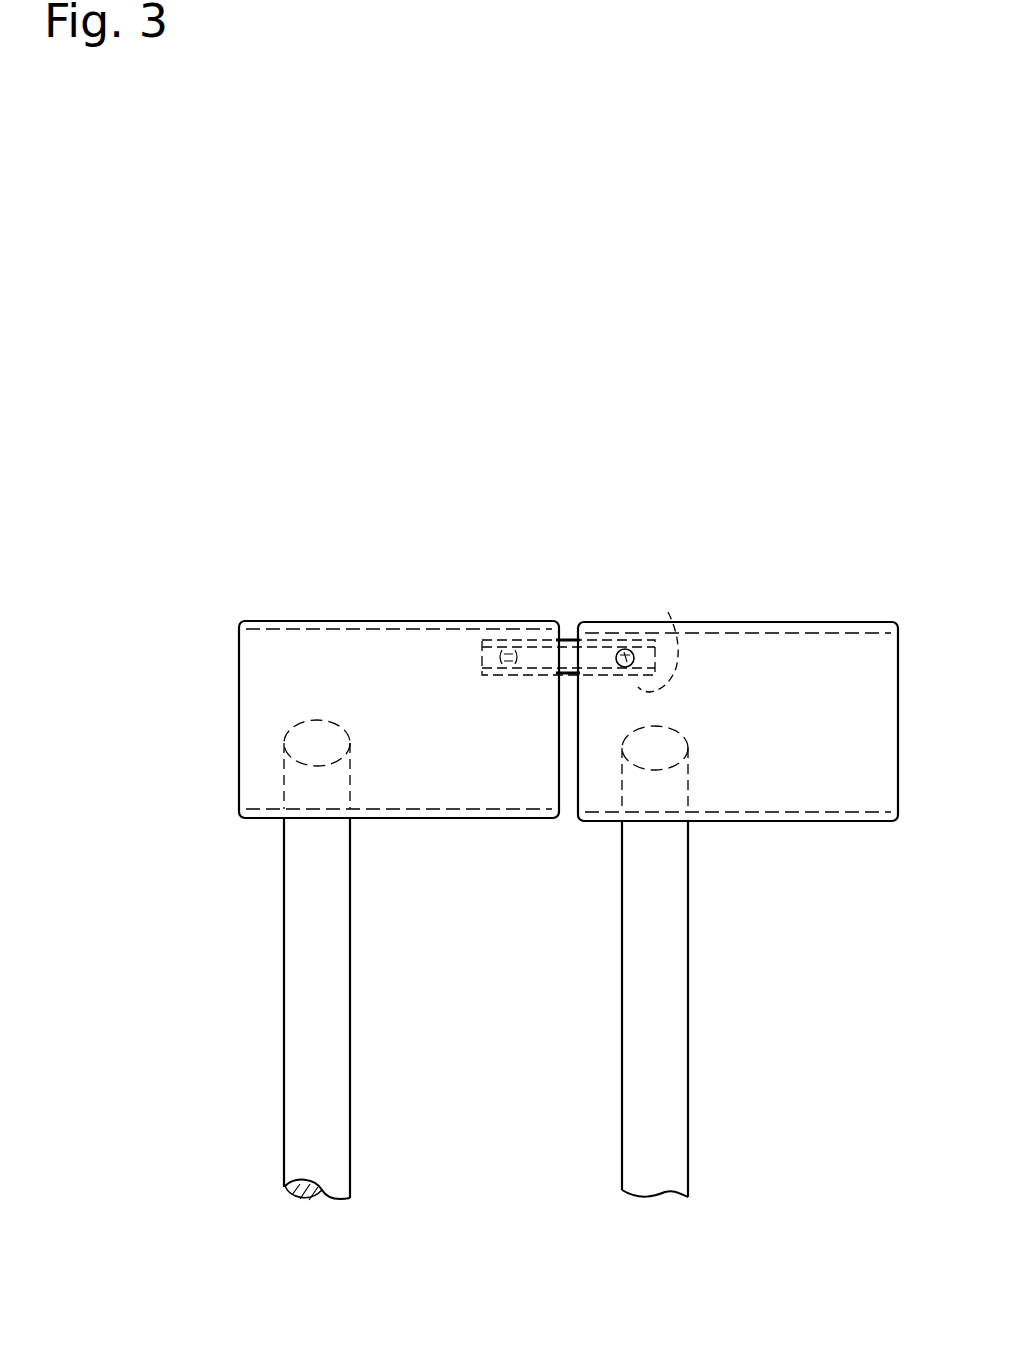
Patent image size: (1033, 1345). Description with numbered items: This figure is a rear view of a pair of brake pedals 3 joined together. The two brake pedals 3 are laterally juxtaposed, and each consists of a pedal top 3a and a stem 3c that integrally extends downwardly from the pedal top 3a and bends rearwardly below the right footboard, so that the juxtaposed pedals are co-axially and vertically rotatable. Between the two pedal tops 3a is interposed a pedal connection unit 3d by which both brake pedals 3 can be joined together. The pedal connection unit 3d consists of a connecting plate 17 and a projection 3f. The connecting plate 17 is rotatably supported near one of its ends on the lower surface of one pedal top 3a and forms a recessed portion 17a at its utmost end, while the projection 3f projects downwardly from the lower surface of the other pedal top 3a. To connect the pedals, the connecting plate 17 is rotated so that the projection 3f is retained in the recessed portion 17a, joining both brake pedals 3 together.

The brake pedal 3 is at (568, 732).
The pedal top 3a is at (359, 645).
The stem 3c is at (337, 953).
The pedal connection unit 3d is at (603, 607).
The projection 3f is at (658, 633).
The connecting plate 17 is at (565, 652).
The recessed portion 17a is at (621, 667).